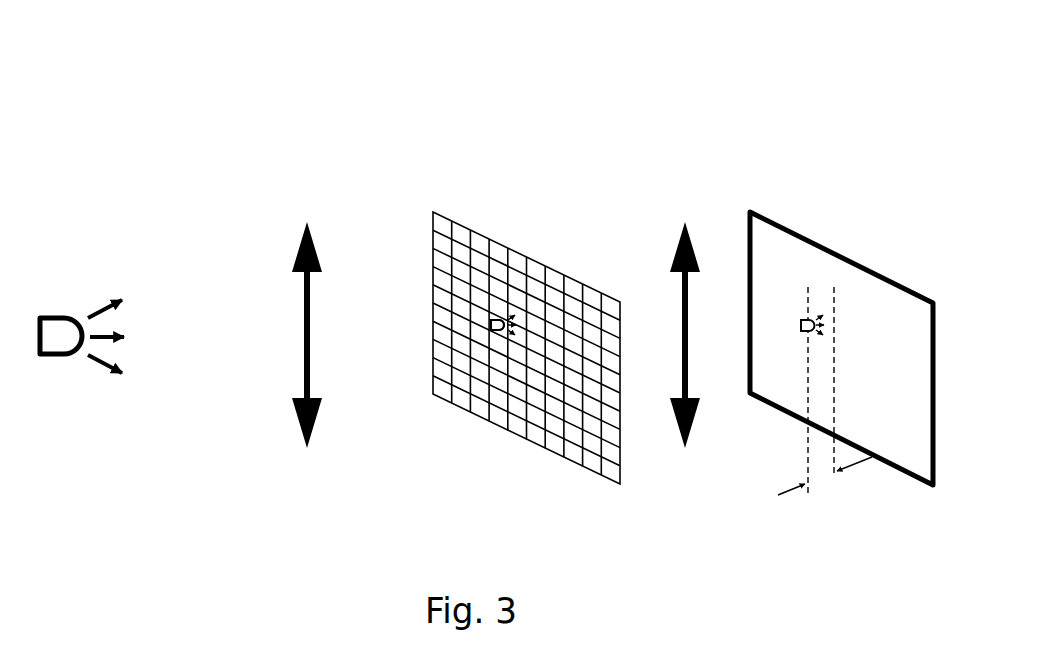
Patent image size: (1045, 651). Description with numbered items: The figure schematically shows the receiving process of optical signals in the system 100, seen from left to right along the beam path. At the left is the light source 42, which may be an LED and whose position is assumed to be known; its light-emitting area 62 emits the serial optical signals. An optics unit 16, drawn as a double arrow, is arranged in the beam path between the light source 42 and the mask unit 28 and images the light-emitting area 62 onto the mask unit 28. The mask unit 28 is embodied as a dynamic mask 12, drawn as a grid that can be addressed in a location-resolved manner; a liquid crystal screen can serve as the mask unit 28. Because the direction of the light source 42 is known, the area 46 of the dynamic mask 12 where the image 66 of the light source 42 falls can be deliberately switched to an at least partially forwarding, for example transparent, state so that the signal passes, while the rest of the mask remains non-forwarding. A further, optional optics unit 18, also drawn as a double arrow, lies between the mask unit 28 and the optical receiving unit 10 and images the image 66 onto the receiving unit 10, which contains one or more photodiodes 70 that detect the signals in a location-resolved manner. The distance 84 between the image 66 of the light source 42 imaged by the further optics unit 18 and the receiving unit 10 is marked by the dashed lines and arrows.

The system 100 is at (545, 108).
The light source 42 is at (82, 306).
The light-emitting area 62 is at (50, 316).
The optics unit 16 is at (313, 221).
The dynamic mask 12 is at (526, 317).
The mask unit 28 is at (486, 236).
The area of the dynamic mask 46 is at (500, 332).
The image of the light source 66 is at (491, 327).
The further optics unit 18 is at (686, 222).
The optical receiving unit 10 is at (841, 317).
The photodiode 70 is at (803, 236).
The distance 84 is at (825, 487).